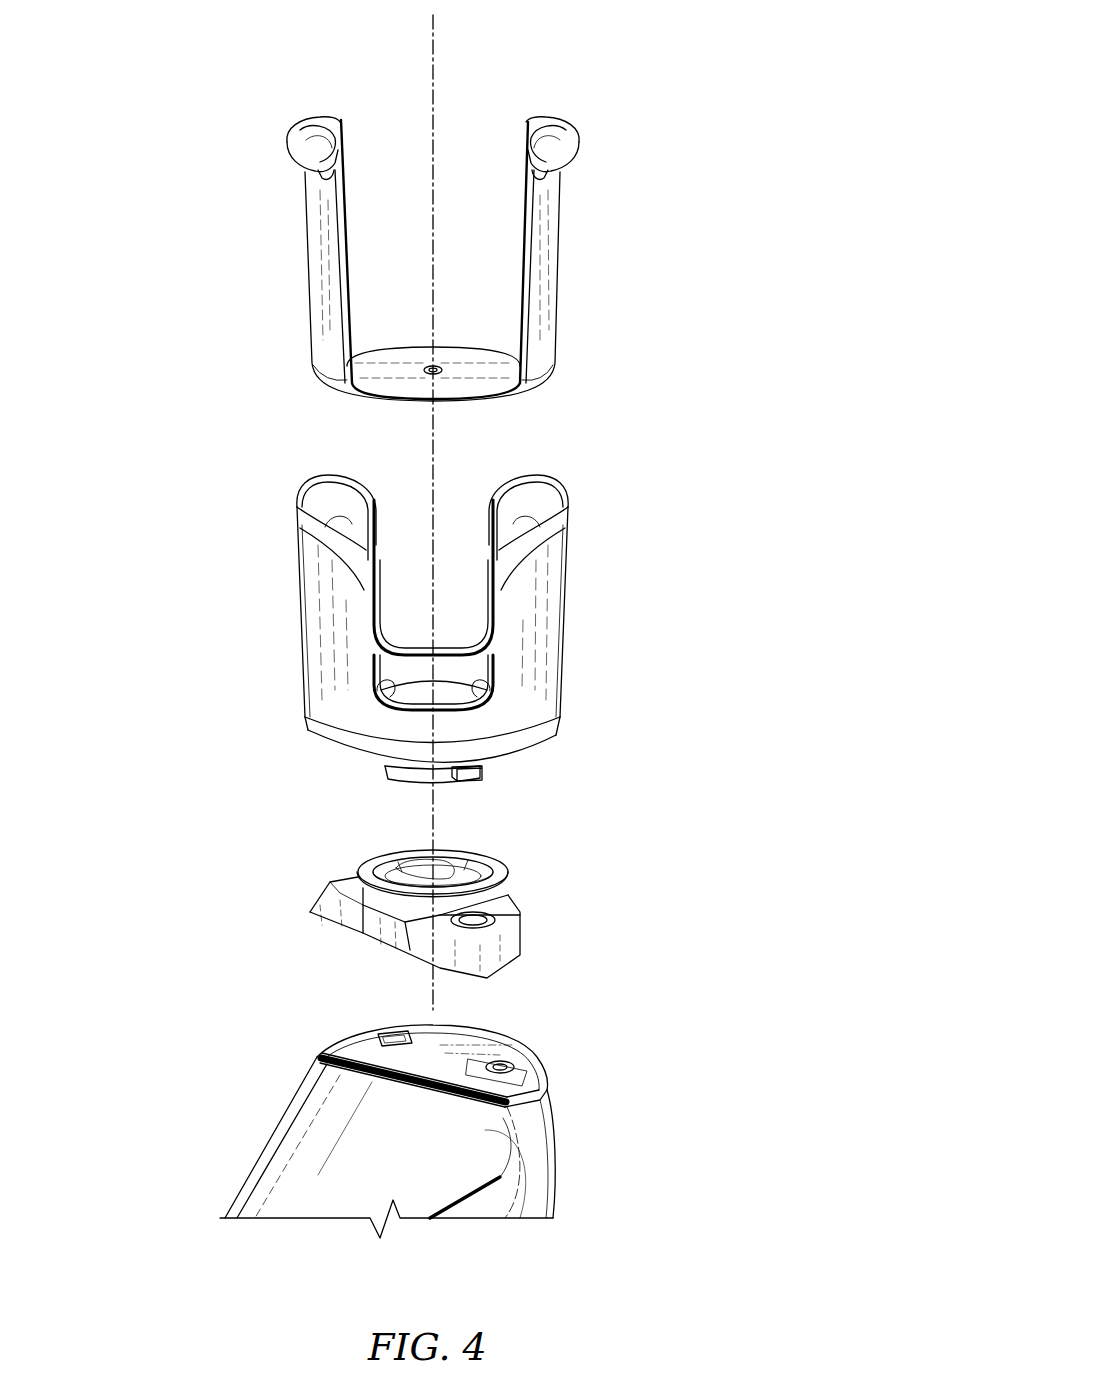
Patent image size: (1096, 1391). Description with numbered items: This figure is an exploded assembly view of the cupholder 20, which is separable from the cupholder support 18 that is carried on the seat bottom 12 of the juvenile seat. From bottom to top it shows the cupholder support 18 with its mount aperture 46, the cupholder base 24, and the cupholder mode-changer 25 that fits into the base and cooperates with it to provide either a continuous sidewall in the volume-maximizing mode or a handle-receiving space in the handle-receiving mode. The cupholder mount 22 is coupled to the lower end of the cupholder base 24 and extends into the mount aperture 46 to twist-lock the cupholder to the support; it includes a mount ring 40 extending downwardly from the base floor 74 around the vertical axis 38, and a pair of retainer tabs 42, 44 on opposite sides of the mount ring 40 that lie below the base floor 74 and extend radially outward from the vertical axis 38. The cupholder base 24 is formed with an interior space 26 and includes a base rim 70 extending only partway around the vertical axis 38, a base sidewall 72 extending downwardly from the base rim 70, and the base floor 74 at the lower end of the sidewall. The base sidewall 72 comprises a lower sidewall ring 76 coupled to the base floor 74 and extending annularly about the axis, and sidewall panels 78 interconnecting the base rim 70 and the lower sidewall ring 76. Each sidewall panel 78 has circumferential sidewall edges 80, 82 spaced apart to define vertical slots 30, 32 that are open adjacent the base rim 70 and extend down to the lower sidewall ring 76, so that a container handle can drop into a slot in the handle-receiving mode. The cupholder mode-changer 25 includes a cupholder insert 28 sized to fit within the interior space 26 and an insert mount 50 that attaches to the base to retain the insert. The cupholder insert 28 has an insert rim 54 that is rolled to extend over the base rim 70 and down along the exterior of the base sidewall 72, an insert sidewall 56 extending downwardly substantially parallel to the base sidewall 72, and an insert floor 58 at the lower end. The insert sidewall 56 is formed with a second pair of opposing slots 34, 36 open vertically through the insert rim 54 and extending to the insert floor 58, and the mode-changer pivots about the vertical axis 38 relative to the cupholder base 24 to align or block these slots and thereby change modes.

The seat bottom 12 is at (546, 1097).
The cupholder support 18 is at (395, 875).
The cupholder 20 is at (714, 45).
The cupholder mount 22 is at (498, 796).
The cupholder base 24 is at (431, 617).
The cupholder mode-changer 25 is at (594, 68).
The interior space 26 is at (553, 484).
The cupholder insert 28 is at (371, 246).
The vertical slot 30 is at (458, 493).
The vertical slot 32 is at (370, 610).
The slot 34 is at (362, 228).
The slot 36 is at (487, 120).
The vertical axis 38 is at (433, 32).
The mount ring 40 is at (440, 772).
The retainer tab 42 is at (483, 771).
The retainer tab 44 is at (386, 768).
The mount aperture 46 is at (385, 855).
The insert mount 50 is at (404, 411).
The insert rim 54 is at (322, 123).
The insert sidewall 56 is at (290, 188).
The insert floor 58 is at (455, 383).
The base rim 70 is at (533, 500).
The base sidewall 72 is at (464, 631).
The base floor 74 is at (548, 748).
The lower sidewall ring 76 is at (413, 735).
The sidewall panel 78 is at (538, 649).
The circumferential sidewall edge 80 is at (378, 690).
The circumferential sidewall edge 82 is at (490, 690).